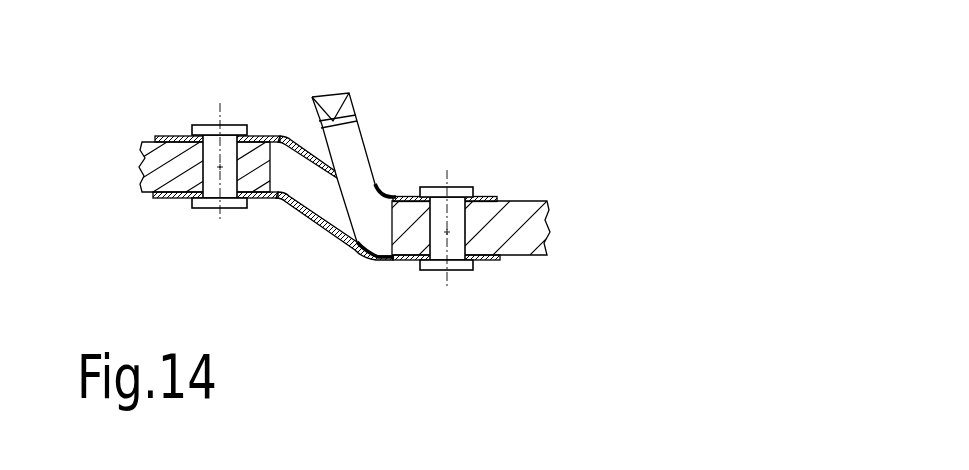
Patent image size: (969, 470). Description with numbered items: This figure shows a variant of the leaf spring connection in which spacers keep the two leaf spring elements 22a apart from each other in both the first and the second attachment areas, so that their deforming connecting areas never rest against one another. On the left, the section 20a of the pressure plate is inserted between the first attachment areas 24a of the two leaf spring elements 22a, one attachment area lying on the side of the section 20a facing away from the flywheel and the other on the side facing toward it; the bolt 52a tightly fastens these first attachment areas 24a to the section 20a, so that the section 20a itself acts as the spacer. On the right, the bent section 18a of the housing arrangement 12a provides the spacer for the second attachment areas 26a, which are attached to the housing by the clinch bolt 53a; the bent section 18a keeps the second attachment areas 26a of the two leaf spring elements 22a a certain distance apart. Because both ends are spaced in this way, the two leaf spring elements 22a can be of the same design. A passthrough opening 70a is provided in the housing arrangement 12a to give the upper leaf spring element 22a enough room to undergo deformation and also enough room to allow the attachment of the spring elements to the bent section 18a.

The housing arrangement 12a is at (323, 93).
The bent section of the housing arrangement 18a is at (537, 252).
The section of the pressure plate 20a is at (143, 175).
The leaf spring element 22a is at (307, 213).
The first attachment area 24a is at (158, 137).
The second attachment area 26a is at (407, 197).
The bolt 52a is at (233, 150).
The clinch bolt 53a is at (440, 243).
The passthrough opening 70a is at (362, 193).